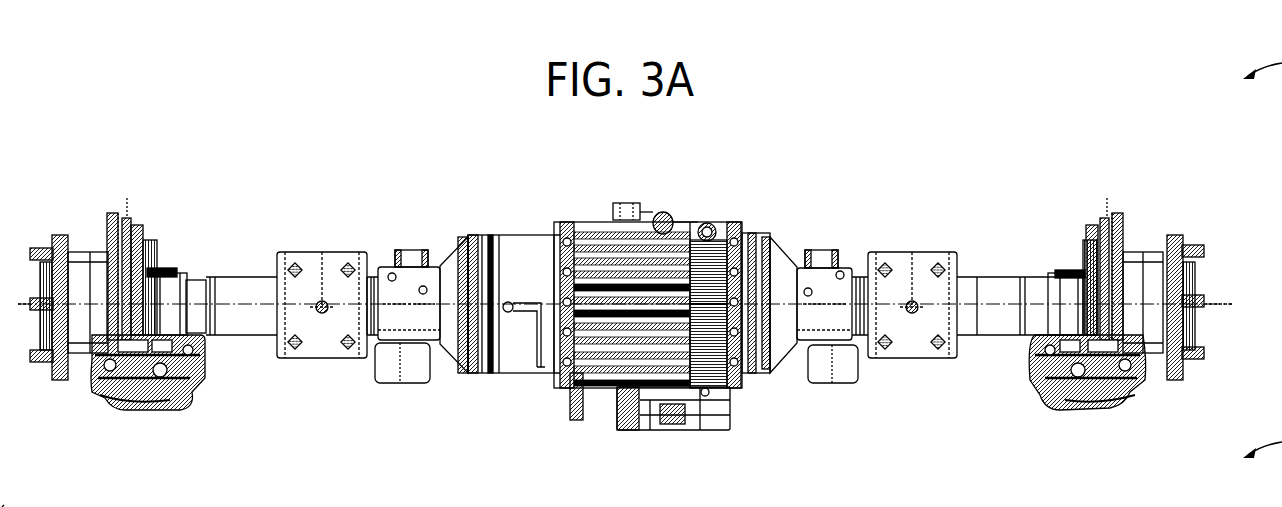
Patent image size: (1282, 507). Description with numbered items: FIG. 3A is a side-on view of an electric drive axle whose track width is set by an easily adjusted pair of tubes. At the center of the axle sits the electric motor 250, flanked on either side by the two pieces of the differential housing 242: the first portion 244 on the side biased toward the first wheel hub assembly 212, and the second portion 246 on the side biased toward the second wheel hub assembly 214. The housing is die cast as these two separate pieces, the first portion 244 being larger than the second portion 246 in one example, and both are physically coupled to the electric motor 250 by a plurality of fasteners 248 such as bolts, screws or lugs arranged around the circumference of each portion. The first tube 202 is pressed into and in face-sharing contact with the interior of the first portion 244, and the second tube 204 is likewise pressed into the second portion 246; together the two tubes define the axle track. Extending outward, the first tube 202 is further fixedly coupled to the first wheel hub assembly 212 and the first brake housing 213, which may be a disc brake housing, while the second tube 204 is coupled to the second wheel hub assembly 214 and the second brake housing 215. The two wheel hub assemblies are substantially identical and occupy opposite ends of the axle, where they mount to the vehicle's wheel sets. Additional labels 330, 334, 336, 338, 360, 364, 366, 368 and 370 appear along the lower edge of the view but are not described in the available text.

The first tube 202 is at (249, 340).
The second tube 204 is at (993, 340).
The first wheel hub assembly 212 is at (86, 180).
The first brake housing 213 is at (98, 393).
The second wheel hub assembly 214 is at (1155, 187).
The second brake housing 215 is at (1122, 400).
The differential housing 242 is at (462, 184).
The first portion 244 is at (503, 375).
The second portion 246 is at (746, 375).
The plurality of fasteners 248 is at (556, 222).
The electric motor 250 is at (681, 222).
The first suspension assembly 330 is at (196, 498).
The first suspension bracket 334 is at (108, 506).
The first suspension arm 336 is at (70, 506).
The first suspension mount 338 is at (30, 506).
The second suspension assembly 360 is at (1029, 499).
The second suspension bracket 364 is at (1112, 506).
The second suspension arm 366 is at (1150, 506).
The second suspension mount 368 is at (1188, 506).
The suspension link 370 is at (1231, 501).